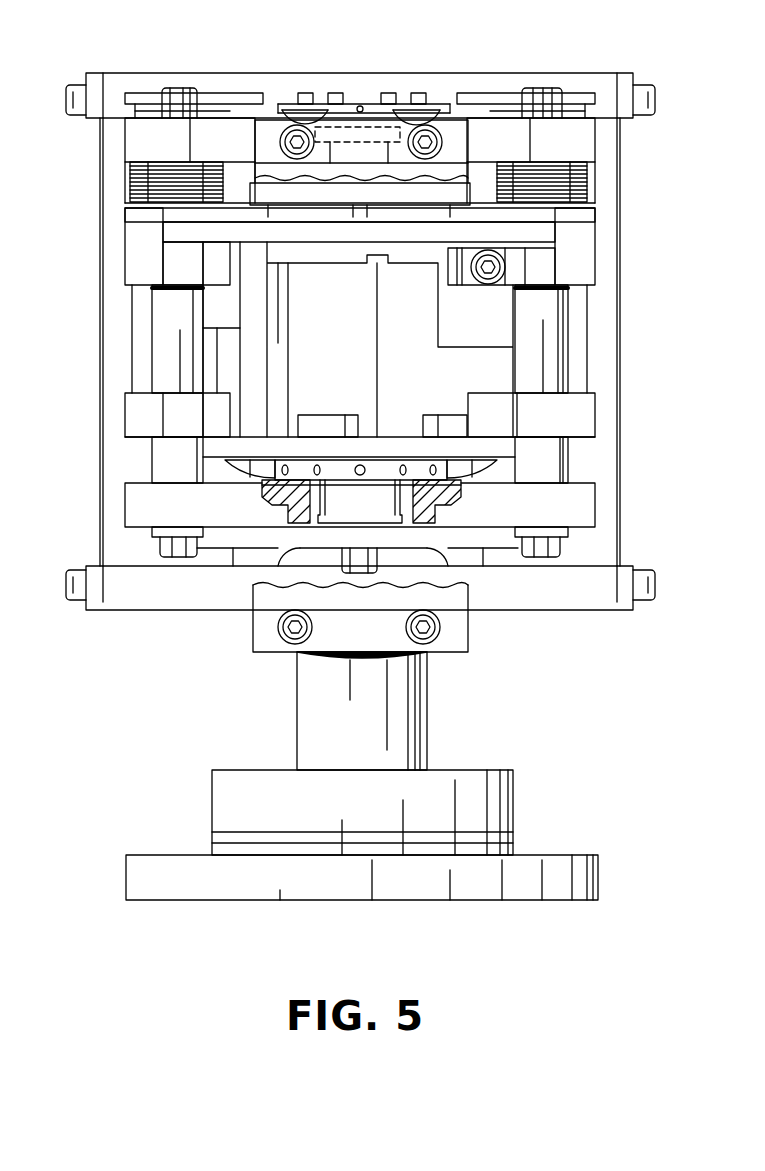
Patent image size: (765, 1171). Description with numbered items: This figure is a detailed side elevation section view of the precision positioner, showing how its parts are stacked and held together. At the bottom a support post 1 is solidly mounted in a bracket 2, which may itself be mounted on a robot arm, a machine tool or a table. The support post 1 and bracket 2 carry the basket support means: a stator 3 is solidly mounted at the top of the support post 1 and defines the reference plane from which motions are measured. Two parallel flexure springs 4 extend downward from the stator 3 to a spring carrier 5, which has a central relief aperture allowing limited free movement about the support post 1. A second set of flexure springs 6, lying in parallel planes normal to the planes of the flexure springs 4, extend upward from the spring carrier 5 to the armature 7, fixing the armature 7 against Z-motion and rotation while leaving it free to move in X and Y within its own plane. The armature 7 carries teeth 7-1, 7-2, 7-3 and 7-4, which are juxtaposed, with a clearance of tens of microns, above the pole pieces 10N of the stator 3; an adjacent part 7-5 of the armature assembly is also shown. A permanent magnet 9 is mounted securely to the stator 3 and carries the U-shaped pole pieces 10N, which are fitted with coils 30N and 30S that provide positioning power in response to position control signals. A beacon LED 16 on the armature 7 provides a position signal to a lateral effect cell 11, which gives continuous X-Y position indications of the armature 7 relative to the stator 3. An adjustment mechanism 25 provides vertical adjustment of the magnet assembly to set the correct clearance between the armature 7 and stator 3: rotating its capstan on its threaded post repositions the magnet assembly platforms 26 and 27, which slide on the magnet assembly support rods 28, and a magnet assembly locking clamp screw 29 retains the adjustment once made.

The support post 1 is at (297, 705).
The bracket 2 is at (126, 868).
The stator 3 is at (237, 133).
The flexure springs 4 is at (102, 210).
The spring carrier 5 is at (152, 612).
The flexure springs 6 is at (270, 167).
The armature 7 is at (118, 85).
The tooth 7-1 is at (305, 95).
The tooth 7-2 is at (336, 95).
The tooth 7-3 is at (387, 97).
The tooth 7-4 is at (419, 97).
The top bar 7-5 is at (207, 97).
The permanent magnet 9 is at (503, 365).
The pole pieces 10N is at (290, 110).
The lateral effect cell 11 is at (343, 128).
The beacon LED 16 is at (362, 106).
The adjustment mechanism 25 is at (417, 467).
The magnet assembly platform 26 is at (138, 422).
The magnet assembly platform 27 is at (140, 262).
The magnet assembly support rods 28 is at (160, 308).
The magnet assembly locking clamp screw 29 is at (472, 273).
The coil 30N is at (128, 175).
The coil 30S is at (588, 178).